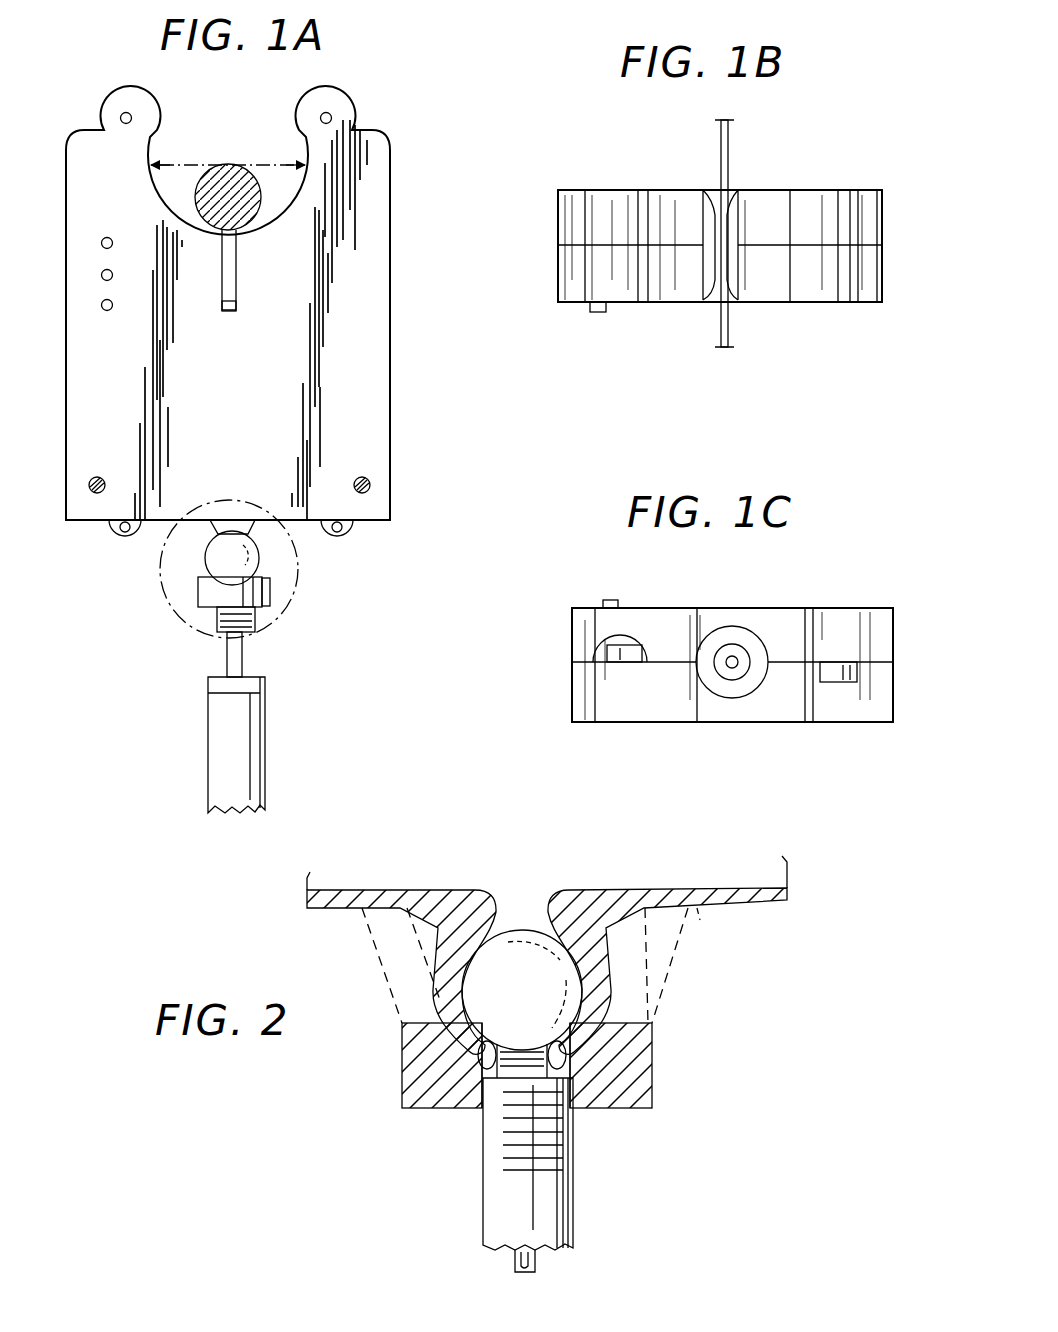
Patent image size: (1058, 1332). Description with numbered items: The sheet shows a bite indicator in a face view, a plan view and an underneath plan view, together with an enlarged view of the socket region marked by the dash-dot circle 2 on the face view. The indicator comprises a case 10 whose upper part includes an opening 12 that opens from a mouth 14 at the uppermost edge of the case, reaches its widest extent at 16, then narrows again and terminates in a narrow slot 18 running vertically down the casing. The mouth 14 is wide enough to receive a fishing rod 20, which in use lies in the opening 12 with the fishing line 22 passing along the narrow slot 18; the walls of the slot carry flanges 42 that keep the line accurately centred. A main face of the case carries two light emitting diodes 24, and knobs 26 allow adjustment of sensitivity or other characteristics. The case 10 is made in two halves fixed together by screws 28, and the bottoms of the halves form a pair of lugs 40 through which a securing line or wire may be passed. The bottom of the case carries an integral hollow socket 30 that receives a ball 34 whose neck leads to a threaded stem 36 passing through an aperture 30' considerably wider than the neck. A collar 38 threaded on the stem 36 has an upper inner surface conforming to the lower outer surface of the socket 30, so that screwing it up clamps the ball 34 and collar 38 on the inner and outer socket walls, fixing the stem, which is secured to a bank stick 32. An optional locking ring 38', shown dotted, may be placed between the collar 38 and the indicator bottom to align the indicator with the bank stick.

In FIG. 1A, the case 10 is at (406, 120).
In FIG. 1B, the case 10 is at (851, 178).
In FIG. 1C, the case 10 is at (842, 592).
In FIG. 2, the case 10 is at (628, 838).
In FIG. 1A, the opening 12 is at (275, 84).
In FIG. 1A, the mouth 14 is at (160, 134).
In FIG. 1A, the widest extent 16 is at (266, 130).
In FIG. 1A, the narrow slot 18 is at (238, 281).
In FIG. 1A, the fishing rod 20 is at (248, 220).
In FIG. 1A, the fishing line 22 is at (237, 313).
In FIG. 1B, the fishing line 22 is at (729, 148).
In FIG. 1A, the light emitting diodes 24 is at (119, 118).
In FIG. 1A, the knobs 26 is at (102, 304).
In FIG. 1B, the knobs 26 is at (597, 313).
In FIG. 1C, the knobs 26 is at (614, 600).
In FIG. 1A, the screws 28 is at (100, 479).
In FIG. 1A, the hollow socket 30 is at (183, 593).
In FIG. 2, the hollow socket 30 is at (597, 990).
In FIG. 2, the aperture 30' is at (473, 1104).
In FIG. 1A, the bank stick 32 is at (266, 722).
In FIG. 2, the ball 34 is at (480, 990).
In FIG. 1A, the threaded stem 36 is at (258, 618).
In FIG. 1C, the threaded stem 36 is at (739, 654).
In FIG. 2, the threaded stem 36 is at (574, 1138).
In FIG. 1A, the collar 38 is at (276, 598).
In FIG. 1C, the collar 38 is at (732, 627).
In FIG. 2, the collar 38 is at (472, 1065).
In FIG. 2, the locking ring 38' is at (708, 939).
In FIG. 1A, the lugs 40 is at (125, 540).
In FIG. 1C, the lugs 40 is at (606, 634).
In FIG. 1B, the flanges 42 is at (710, 190).
In FIG. 1A, the section detail circle 2 is at (207, 640).